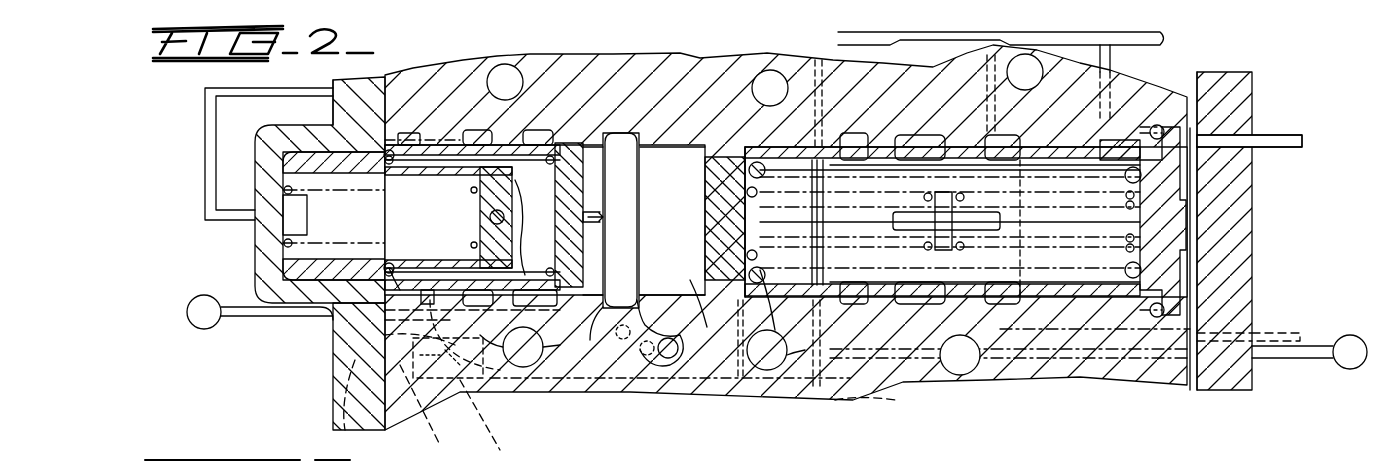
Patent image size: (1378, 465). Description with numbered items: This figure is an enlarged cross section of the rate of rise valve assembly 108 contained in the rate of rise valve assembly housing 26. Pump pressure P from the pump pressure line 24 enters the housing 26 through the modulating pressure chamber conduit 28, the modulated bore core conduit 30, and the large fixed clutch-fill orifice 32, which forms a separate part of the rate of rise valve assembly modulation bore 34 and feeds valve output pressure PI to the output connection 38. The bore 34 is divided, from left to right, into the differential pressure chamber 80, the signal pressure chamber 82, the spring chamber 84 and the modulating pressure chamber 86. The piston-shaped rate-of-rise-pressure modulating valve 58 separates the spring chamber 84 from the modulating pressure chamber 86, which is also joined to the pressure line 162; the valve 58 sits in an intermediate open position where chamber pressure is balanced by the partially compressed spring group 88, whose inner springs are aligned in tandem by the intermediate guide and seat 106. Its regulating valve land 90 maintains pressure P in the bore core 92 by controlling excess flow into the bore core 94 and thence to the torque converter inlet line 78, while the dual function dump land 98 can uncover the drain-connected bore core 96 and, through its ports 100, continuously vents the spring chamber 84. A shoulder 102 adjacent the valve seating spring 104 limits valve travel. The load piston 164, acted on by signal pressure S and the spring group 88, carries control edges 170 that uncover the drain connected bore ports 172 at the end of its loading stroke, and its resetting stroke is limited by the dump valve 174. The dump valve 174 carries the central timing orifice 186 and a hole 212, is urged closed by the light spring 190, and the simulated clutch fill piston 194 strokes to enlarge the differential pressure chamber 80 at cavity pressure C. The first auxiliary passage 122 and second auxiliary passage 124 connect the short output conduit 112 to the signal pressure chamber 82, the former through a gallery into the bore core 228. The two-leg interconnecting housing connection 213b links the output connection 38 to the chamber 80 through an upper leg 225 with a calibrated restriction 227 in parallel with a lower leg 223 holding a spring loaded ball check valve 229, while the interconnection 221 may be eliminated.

The pump pressure line 24 is at (1165, 42).
The rate of rise valve assembly housing 26 is at (262, 262).
The modulating pressure chamber conduit 28 is at (1112, 60).
The modulated bore core conduit 30 is at (1000, 45).
The clutch-fill orifice 32 is at (889, 45).
The rate of rise valve assembly modulation bore 34 is at (1030, 290).
The output connection 38 is at (879, 401).
The rate-of-rise-pressure modulating valve 58 is at (1165, 172).
The torque converter inlet line 78 is at (1262, 332).
The differential pressure chamber 80 is at (548, 318).
The signal pressure chamber 82 is at (708, 315).
The spring chamber 84 is at (832, 310).
The modulating pressure chamber 86 is at (1192, 320).
The spring group 88 is at (1125, 176).
The regulating valve land 90 is at (1000, 137).
The bore core 92 is at (1000, 150).
The bore core 94 is at (915, 137).
The bore core 96 is at (854, 133).
The dual function dump land 98 is at (812, 148).
The ports 100 is at (862, 230).
The shoulder 102 is at (1060, 275).
The valve seating spring 104 is at (1055, 130).
The intermediate guide and seat 106 is at (945, 195).
The rate of rise valve assembly 108 is at (765, 295).
The short output conduit 112 is at (600, 392).
The first auxiliary passage 122 is at (565, 300).
The second auxiliary passage 124 is at (663, 342).
The pressure line 162 is at (1265, 135).
The load piston 164 is at (722, 170).
The control edges 170 is at (748, 160).
The drain connected bore ports 172 is at (776, 222).
The dump valve 174 is at (548, 135).
The timing orifice 186 is at (511, 216).
The light spring 190 is at (472, 148).
The simulated clutch fill piston 194 is at (505, 205).
The hole 212 is at (388, 266).
The interconnecting housing connection 213b is at (509, 421).
The valve to chamber interconnection 221 is at (360, 425).
The lower leg 223 is at (425, 380).
The upper leg 225 is at (520, 347).
The calibrated restriction 227 is at (385, 345).
The bore core 228 is at (618, 135).
The ball check valve 229 is at (430, 415).
The dump valve cavity pressure C is at (465, 335).
The pump pressure P is at (1000, 142).
The valve output pressure PI is at (838, 38).
The signal pressure S is at (645, 145).